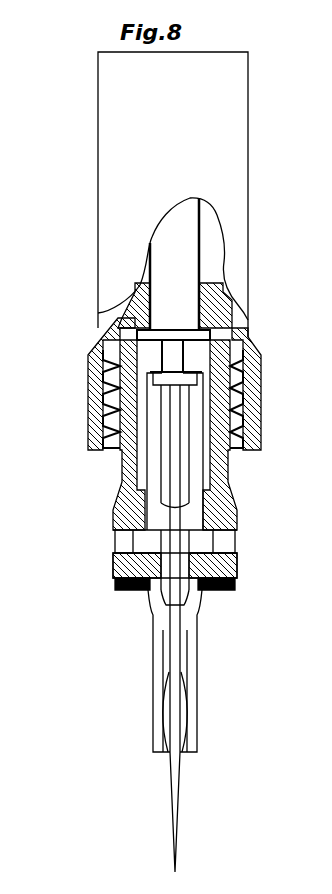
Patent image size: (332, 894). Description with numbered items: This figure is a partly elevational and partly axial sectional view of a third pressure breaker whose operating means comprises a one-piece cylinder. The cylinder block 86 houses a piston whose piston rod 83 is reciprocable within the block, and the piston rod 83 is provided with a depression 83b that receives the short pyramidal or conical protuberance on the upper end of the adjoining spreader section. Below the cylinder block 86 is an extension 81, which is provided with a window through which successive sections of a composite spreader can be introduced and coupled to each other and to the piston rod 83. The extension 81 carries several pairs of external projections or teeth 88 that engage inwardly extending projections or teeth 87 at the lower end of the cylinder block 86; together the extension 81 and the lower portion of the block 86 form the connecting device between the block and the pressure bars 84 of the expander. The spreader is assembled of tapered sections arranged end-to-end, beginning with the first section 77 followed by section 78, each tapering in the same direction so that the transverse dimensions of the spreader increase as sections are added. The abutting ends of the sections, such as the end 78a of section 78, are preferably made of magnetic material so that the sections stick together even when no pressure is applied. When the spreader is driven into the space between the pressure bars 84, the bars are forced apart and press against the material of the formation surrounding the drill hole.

The first section of the spreader 77 is at (183, 646).
The spreader section 78 is at (170, 468).
The end of spreader section 78a is at (147, 376).
The extension 81 is at (222, 517).
The piston rod 83 is at (186, 258).
The depression 83b is at (171, 372).
The pressure bars 84 is at (192, 727).
The cylinder block 86 is at (235, 143).
The inwardly extending projections or teeth 87 is at (106, 443).
The external projections or teeth 88 is at (233, 405).